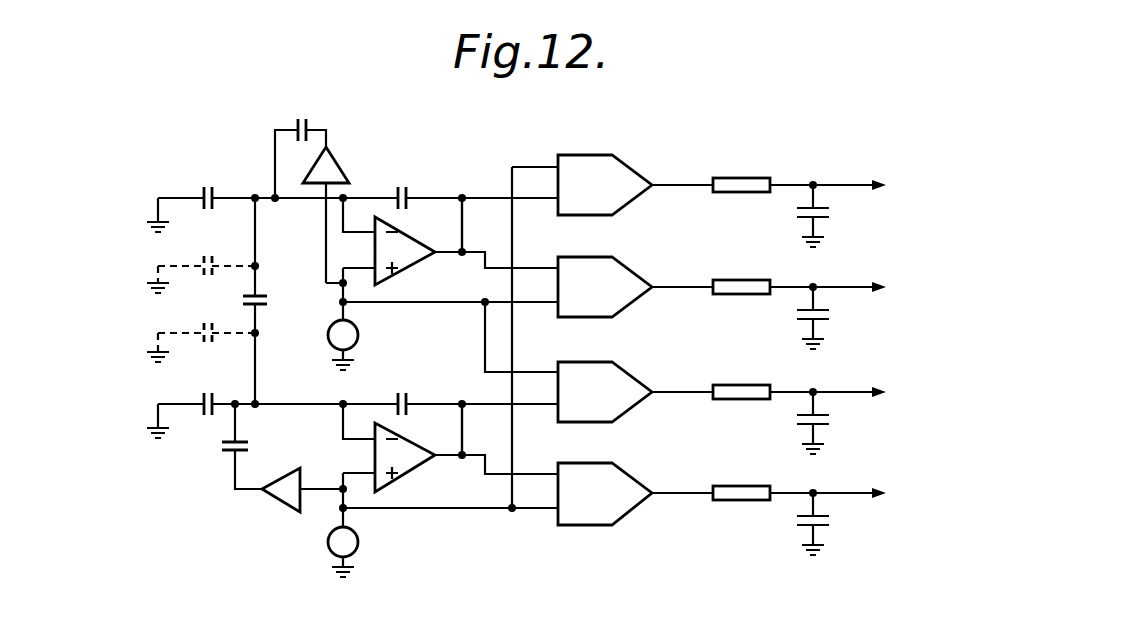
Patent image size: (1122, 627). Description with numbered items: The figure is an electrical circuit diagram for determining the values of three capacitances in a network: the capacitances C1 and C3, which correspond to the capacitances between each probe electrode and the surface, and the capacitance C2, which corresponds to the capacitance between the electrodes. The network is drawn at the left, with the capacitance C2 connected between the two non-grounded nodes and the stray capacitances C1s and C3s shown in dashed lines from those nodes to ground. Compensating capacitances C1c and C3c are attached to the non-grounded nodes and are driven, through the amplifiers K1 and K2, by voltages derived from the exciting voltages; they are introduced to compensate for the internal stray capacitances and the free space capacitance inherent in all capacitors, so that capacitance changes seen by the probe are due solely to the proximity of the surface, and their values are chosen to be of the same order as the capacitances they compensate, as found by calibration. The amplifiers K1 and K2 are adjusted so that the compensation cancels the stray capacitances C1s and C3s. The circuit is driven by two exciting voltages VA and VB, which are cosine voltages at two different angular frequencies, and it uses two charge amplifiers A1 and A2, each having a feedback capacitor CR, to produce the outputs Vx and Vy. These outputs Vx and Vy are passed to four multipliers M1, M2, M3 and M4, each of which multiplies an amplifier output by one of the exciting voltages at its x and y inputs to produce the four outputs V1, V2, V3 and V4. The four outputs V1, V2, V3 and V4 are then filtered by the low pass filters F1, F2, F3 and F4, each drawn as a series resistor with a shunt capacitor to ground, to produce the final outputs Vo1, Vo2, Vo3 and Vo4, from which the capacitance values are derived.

The capacitance C1 is at (217, 193).
The capacitance C3 is at (217, 399).
The capacitance C2 is at (262, 306).
The compensating capacitance C1c is at (296, 124).
The stray capacitance C1s is at (216, 263).
The stray capacitance C3s is at (206, 331).
The compensating capacitance C3c is at (229, 455).
The amplifier K1 is at (331, 171).
The amplifier K2 is at (284, 497).
The feedback capacitor CR is at (410, 190).
The charge amplifier A1 is at (407, 250).
The charge amplifier A2 is at (403, 460).
The exciting voltage VA is at (358, 335).
The exciting voltage VB is at (356, 549).
The charge amplifier output Vx is at (477, 227).
The charge amplifier output Vy is at (477, 431).
The multiplier M1 is at (604, 163).
The multiplier M2 is at (613, 290).
The multiplier M3 is at (623, 396).
The multiplier M4 is at (597, 505).
The multiplier output V1 is at (682, 170).
The multiplier output V2 is at (682, 272).
The multiplier output V3 is at (682, 380).
The multiplier output V4 is at (682, 482).
The low pass filter F1 is at (800, 222).
The low pass filter F2 is at (800, 323).
The low pass filter F3 is at (800, 427).
The low pass filter F4 is at (800, 533).
The filtered output Vo1 is at (869, 190).
The filtered output Vo2 is at (869, 292).
The filtered output Vo3 is at (869, 397).
The filtered output Vo4 is at (869, 498).